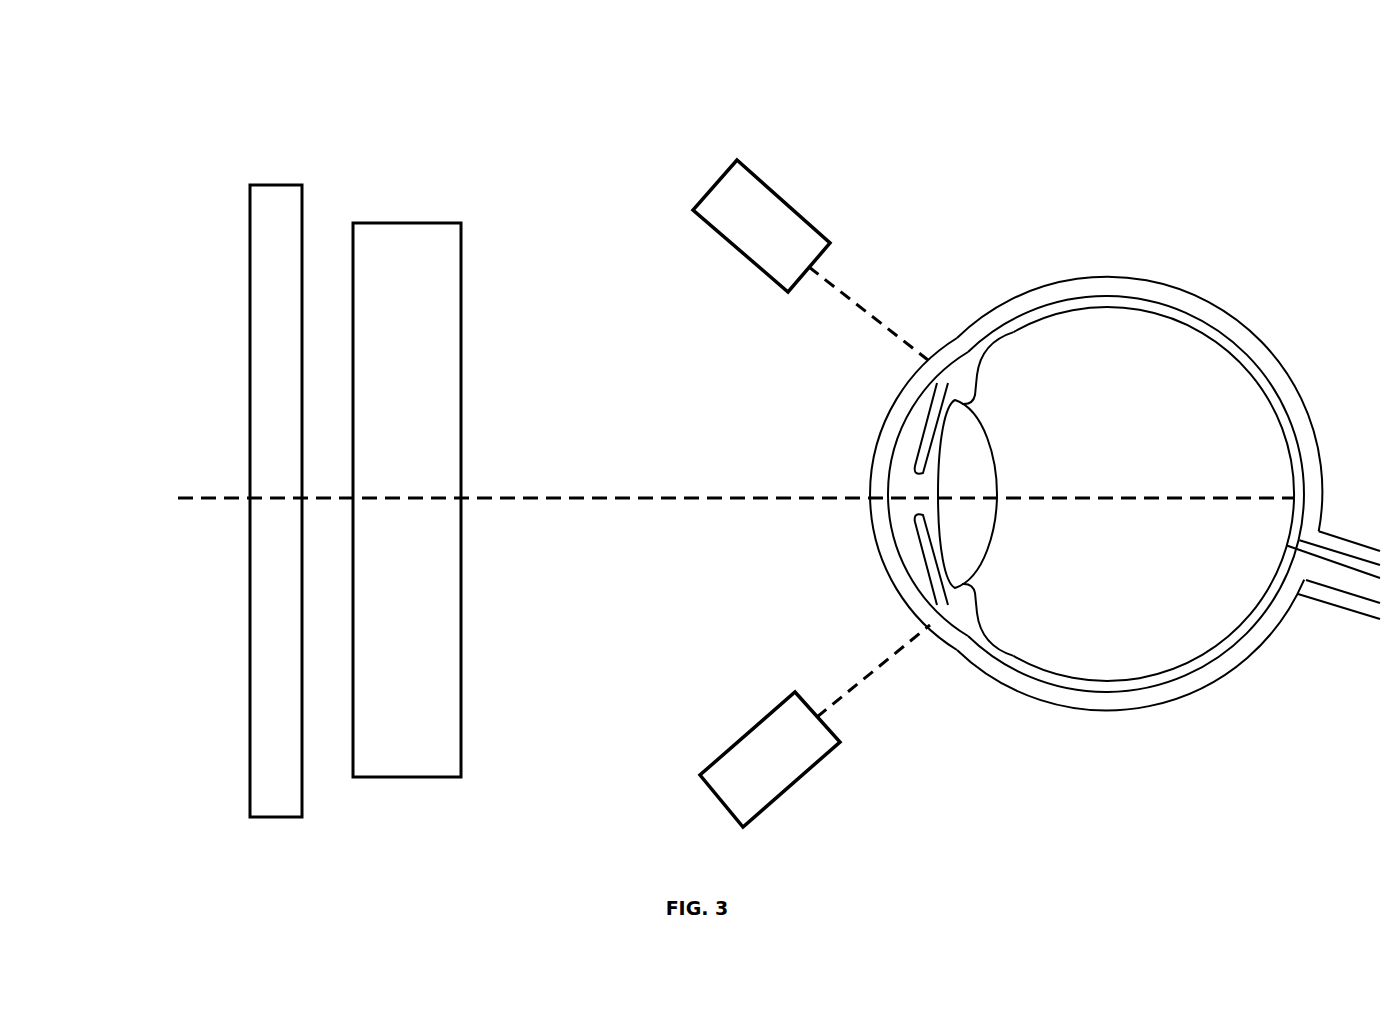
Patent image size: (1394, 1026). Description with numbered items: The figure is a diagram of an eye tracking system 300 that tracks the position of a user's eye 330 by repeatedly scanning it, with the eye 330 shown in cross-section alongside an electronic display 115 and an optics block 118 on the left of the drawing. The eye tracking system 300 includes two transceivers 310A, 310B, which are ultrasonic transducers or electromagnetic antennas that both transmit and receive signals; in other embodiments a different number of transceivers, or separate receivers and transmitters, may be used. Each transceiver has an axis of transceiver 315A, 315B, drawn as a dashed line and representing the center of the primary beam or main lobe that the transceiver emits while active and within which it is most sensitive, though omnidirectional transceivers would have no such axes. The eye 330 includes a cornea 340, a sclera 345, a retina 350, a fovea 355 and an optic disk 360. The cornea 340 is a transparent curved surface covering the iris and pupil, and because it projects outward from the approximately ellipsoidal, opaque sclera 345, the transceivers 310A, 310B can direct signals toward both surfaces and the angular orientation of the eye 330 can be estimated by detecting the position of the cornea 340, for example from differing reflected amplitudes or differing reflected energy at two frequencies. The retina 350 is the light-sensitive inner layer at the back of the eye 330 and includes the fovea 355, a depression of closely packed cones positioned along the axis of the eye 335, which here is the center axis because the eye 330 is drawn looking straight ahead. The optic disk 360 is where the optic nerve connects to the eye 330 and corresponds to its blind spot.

The eye tracking system 300 is at (281, 16).
The electronic display 115 is at (280, 176).
The optics block 118 is at (405, 220).
The transceiver 310A is at (720, 246).
The transceiver 310B is at (695, 804).
The axis of transceiver 315A is at (848, 285).
The axis of transceiver 315B is at (869, 665).
The eye 330 is at (1068, 513).
The axis of the eye 335 is at (611, 495).
The cornea 340 is at (858, 467).
The sclera 345 is at (955, 338).
The retina 350 is at (1240, 363).
The fovea 355 is at (1281, 508).
The optic disk 360 is at (1273, 556).